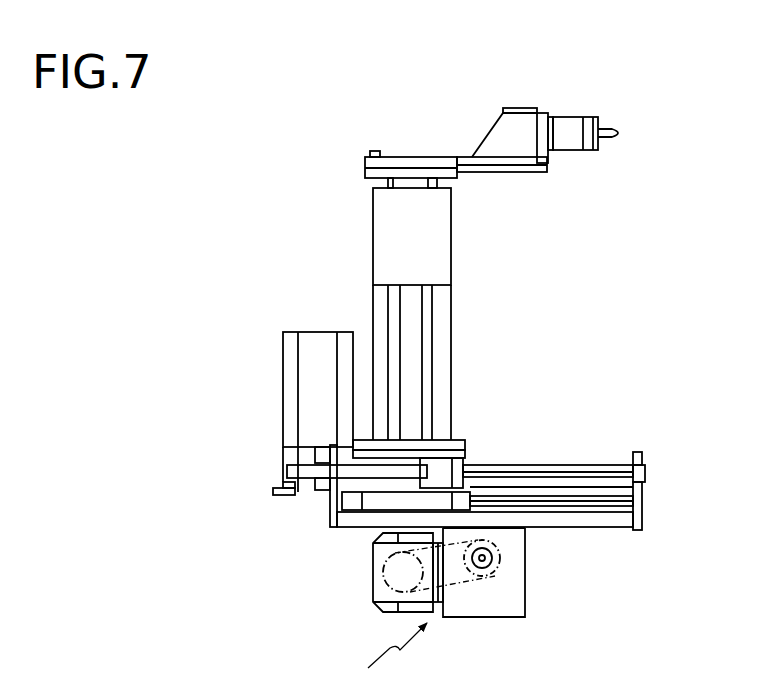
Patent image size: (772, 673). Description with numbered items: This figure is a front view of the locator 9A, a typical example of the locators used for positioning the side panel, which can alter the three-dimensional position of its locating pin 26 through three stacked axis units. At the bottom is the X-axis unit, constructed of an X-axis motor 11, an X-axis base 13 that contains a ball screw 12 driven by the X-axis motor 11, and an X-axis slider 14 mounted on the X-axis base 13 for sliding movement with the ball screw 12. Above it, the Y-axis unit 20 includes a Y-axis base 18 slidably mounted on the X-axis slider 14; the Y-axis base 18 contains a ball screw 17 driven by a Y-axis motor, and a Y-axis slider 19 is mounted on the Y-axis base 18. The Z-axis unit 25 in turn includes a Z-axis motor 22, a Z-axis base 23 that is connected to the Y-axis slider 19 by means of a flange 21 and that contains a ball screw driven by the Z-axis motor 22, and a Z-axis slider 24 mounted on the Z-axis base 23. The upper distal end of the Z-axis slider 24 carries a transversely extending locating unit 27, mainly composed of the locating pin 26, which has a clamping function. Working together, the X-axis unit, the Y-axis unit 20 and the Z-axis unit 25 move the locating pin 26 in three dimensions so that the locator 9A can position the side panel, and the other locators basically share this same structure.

The locator 9A is at (354, 232).
The X-axis motor 11 is at (373, 580).
The ball screw 12 is at (493, 565).
The X-axis base 13 is at (513, 603).
The X-axis slider 14 is at (516, 532).
The ball screw 17 is at (520, 472).
The Y-axis base 18 is at (646, 492).
The Y-axis slider 19 is at (459, 441).
The Y-axis unit 20 is at (334, 503).
The flange 21 is at (388, 320).
The Z-axis motor 22 is at (308, 380).
The Z-axis base 23 is at (452, 265).
The Z-axis slider 24 is at (437, 184).
The Z-axis unit 25 is at (461, 342).
The locating pin 26 is at (620, 127).
The locating unit 27 is at (573, 108).